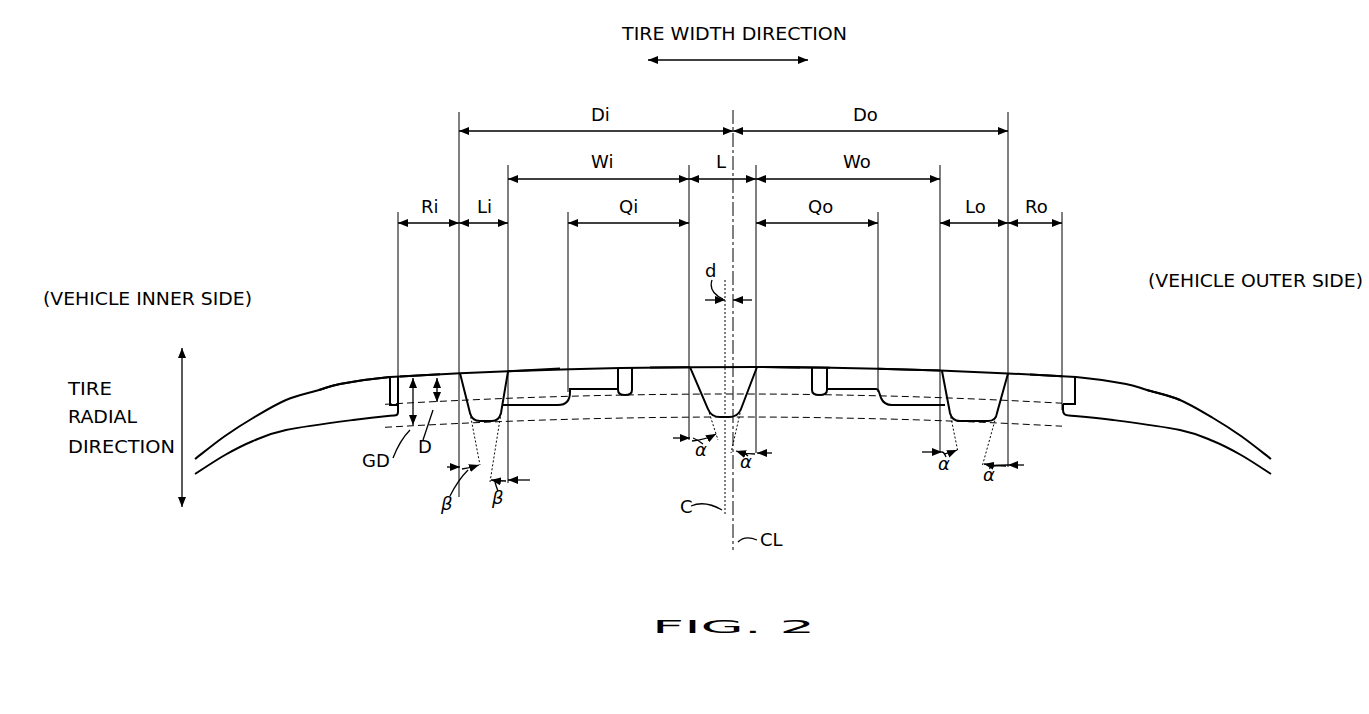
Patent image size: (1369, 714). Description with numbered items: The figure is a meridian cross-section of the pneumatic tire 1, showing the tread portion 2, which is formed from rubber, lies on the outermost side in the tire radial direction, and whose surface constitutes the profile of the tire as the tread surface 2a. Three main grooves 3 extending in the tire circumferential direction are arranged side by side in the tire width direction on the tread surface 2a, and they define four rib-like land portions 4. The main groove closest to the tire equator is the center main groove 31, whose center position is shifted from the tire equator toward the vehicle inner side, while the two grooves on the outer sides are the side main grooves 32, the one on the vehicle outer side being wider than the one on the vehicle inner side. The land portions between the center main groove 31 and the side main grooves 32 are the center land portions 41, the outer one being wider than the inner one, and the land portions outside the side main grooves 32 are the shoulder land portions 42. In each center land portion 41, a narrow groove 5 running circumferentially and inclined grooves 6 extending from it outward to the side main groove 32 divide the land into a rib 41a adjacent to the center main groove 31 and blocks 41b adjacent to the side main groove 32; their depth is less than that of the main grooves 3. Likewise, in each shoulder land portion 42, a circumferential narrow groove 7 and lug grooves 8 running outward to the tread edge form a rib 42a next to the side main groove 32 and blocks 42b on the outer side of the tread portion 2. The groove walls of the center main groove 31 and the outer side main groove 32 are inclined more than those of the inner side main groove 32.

The pneumatic tire 1 is at (1122, 165).
The tread portion 2 is at (1114, 374).
The tread surface 2a is at (800, 368).
The main grooves 3 is at (734, 363).
The center main groove 31 is at (698, 385).
The side main grooves 32 is at (468, 373).
The land portions 4 is at (733, 361).
The center land portions 41 is at (660, 372).
The rib 41a is at (685, 370).
The blocks 41b is at (592, 372).
The shoulder land portions 42 is at (450, 373).
The rib 42a is at (424, 375).
The blocks 42b is at (280, 398).
The narrow groove 5 is at (626, 370).
The inclined grooves 6 is at (543, 370).
The circumferential narrow groove 7 is at (393, 376).
The lug grooves 8 is at (340, 384).